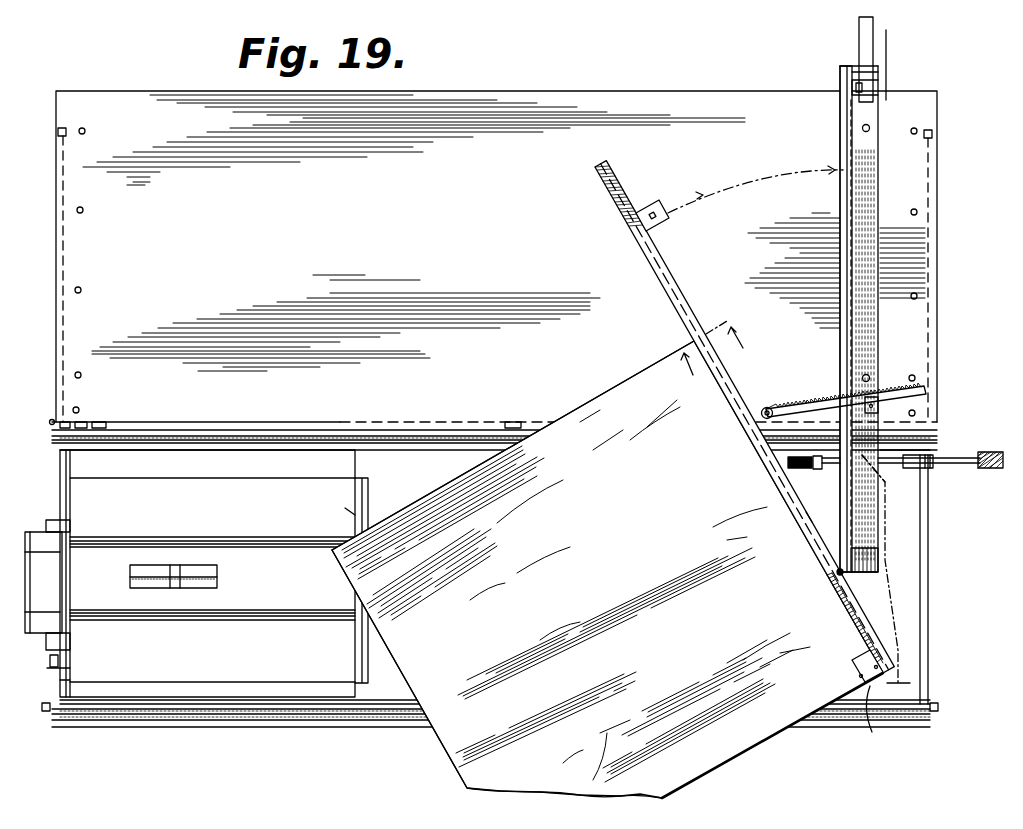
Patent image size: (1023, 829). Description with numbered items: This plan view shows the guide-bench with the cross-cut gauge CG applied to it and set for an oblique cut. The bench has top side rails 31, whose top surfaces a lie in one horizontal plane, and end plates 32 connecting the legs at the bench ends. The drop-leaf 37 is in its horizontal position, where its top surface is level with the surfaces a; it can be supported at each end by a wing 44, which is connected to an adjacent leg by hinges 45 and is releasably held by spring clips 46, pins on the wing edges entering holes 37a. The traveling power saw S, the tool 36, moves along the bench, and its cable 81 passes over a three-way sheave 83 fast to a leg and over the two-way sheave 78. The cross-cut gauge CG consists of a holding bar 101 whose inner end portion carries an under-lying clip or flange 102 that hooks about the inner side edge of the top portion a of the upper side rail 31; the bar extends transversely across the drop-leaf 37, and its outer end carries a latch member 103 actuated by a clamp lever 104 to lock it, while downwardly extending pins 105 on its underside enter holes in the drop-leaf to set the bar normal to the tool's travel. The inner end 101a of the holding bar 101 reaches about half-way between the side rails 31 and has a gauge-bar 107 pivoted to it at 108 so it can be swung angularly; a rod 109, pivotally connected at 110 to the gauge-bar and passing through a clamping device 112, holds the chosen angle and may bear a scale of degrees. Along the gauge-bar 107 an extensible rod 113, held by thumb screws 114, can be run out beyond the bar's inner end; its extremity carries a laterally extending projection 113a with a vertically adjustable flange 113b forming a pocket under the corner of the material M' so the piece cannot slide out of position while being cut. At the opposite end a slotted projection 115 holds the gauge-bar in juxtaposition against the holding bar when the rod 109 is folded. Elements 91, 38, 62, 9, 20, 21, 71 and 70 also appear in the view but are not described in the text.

The drop-leaf 37 is at (522, 91).
The openings or holes 37a is at (58, 132).
The holes 91 is at (85, 134).
The wing 44 is at (63, 252).
The hinges 45 is at (50, 422).
The scale 38 is at (112, 425).
The top side rails 31 is at (203, 436).
The spring clips 46 is at (46, 704).
The end plates 32 is at (60, 492).
The carriage guide bar 62 is at (291, 472).
The guide rail 9 is at (295, 537).
The tool 36 is at (205, 574).
The power saw S is at (356, 511).
The rod 20 is at (882, 36).
The clamp lever 104 is at (878, 70).
The latch member 103 is at (880, 88).
The pins 105 is at (869, 126).
The holding bar 101 is at (855, 350).
The inner end of the holding bar 101a is at (870, 560).
The thumb screws 114 is at (695, 320).
The cross-cut gauge CG is at (687, 288).
The slotted projection 115 is at (653, 205).
The material M is at (591, 406).
The cutting line 21 is at (710, 355).
The pivotal connection 110 is at (766, 407).
The rod 109 is at (800, 405).
The clamping device 112 is at (879, 404).
The two-way sheave 78 is at (785, 463).
The cable 81 is at (818, 469).
The clip or flange 102 is at (886, 480).
The adjusting rod 71 is at (965, 456).
The knob 70 is at (991, 468).
The three-way sheave 83 is at (921, 470).
The top surface of the side rail a is at (906, 449).
The gauge-bar 107 is at (806, 512).
The pivot 108 is at (843, 575).
The extensible rod 113 is at (850, 608).
The flange 113b is at (863, 668).
The laterally extending projection 113a is at (884, 718).